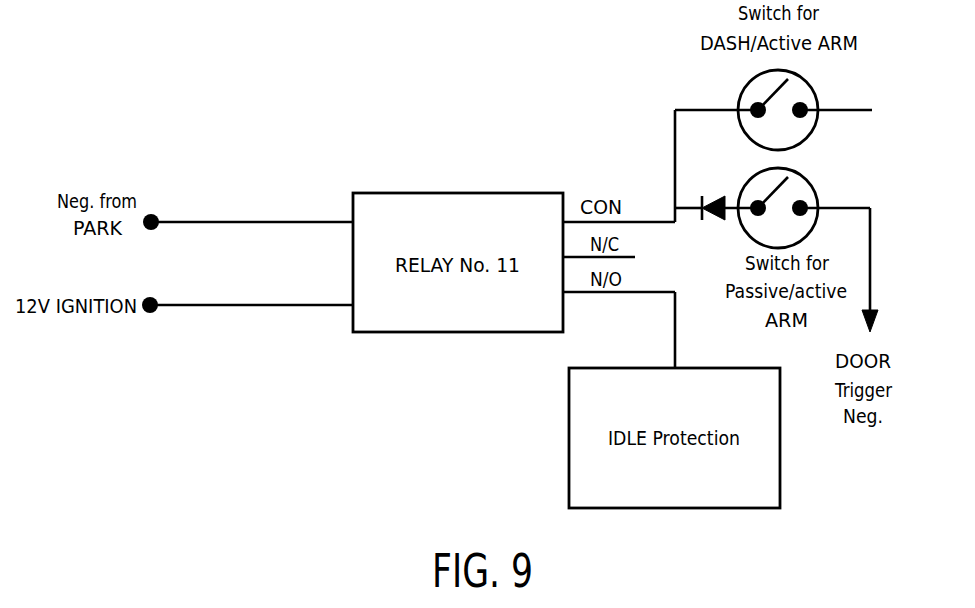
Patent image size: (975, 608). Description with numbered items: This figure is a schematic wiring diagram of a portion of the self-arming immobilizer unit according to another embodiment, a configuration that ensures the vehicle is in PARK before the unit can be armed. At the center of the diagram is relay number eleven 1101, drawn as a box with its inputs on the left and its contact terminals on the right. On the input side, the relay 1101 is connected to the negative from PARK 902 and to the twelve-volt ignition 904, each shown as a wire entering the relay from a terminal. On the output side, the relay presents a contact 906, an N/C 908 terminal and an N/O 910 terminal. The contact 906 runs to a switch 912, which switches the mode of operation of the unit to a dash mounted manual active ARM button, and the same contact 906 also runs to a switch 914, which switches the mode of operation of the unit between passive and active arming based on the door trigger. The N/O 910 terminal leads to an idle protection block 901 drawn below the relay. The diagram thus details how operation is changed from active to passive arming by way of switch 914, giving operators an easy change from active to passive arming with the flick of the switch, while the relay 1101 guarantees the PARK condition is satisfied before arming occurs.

The idle protection circuit 901 is at (568, 438).
The negative from PARK 902 is at (270, 222).
The 12V ignition 904 is at (278, 305).
The contact 906 is at (674, 153).
The N/C 908 is at (620, 256).
The N/O 910 is at (674, 312).
The switch 912 is at (803, 147).
The switch 914 is at (743, 240).
The relay no. 11 1101 is at (457, 193).